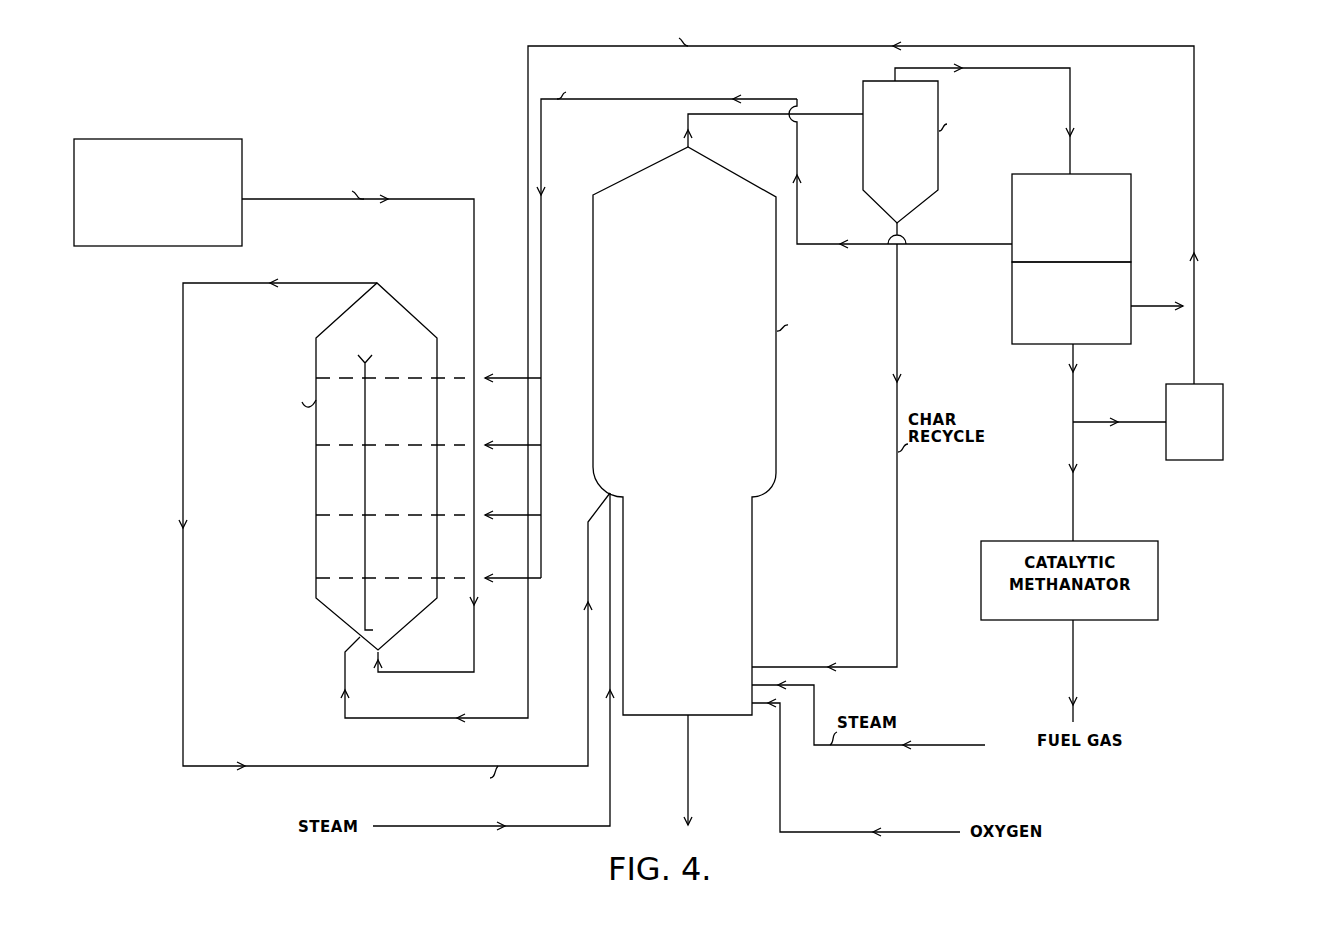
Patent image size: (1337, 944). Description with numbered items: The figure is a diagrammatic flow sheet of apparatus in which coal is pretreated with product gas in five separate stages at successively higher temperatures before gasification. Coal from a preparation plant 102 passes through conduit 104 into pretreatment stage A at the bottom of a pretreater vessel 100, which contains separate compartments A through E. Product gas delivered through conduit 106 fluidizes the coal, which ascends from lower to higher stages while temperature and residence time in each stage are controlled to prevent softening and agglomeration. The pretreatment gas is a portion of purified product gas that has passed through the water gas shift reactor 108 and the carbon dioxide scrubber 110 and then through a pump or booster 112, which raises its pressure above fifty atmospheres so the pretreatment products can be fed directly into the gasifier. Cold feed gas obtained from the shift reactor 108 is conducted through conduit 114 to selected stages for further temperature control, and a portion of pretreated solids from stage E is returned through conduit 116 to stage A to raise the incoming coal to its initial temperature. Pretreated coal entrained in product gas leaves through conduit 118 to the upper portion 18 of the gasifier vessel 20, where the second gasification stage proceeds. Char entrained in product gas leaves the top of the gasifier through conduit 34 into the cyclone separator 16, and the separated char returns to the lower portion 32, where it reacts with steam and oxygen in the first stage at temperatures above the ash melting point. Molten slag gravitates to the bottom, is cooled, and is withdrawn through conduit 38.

The pretreater vessel 100 is at (316, 437).
The preparation plant 102 is at (242, 148).
The conduit 104 is at (452, 199).
The conduit 106 is at (770, 46).
The water gas shift reactor 108 is at (1131, 213).
The carbon dioxide scrubber 110 is at (1012, 303).
The booster 112 is at (1223, 391).
The conduit 114 is at (541, 143).
The conduit 116 is at (365, 367).
The conduit 118 is at (183, 430).
The cyclone separator 16 is at (905, 130).
The upper portion 18 is at (593, 307).
The gasifier vessel 20 is at (667, 338).
The lower portion 32 is at (752, 625).
The conduit 34 is at (690, 135).
The conduit 38 is at (691, 766).